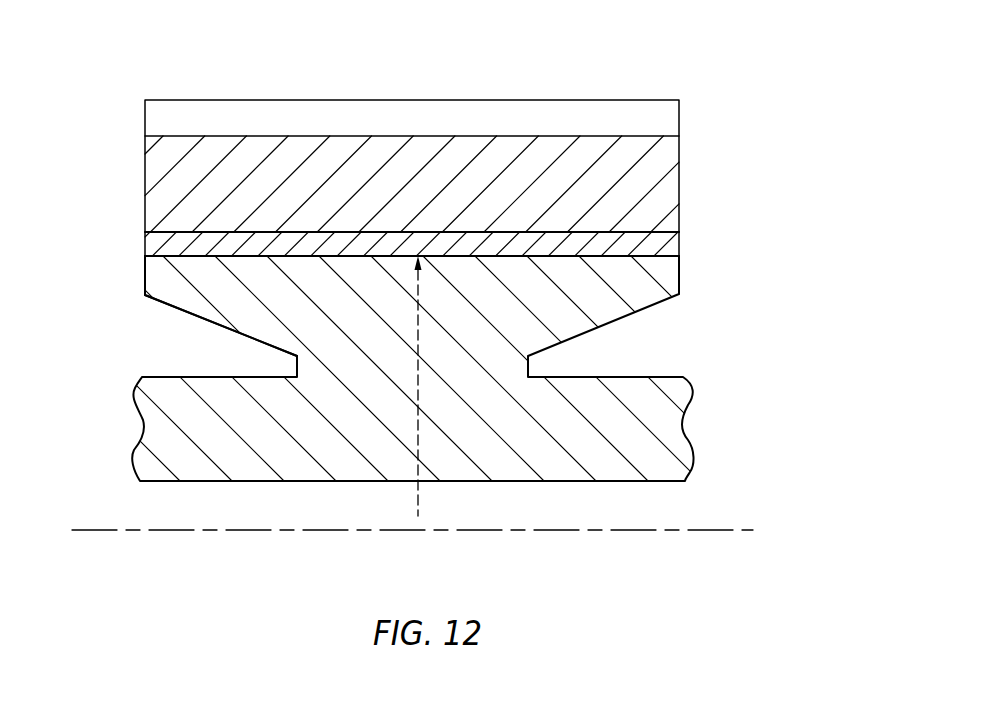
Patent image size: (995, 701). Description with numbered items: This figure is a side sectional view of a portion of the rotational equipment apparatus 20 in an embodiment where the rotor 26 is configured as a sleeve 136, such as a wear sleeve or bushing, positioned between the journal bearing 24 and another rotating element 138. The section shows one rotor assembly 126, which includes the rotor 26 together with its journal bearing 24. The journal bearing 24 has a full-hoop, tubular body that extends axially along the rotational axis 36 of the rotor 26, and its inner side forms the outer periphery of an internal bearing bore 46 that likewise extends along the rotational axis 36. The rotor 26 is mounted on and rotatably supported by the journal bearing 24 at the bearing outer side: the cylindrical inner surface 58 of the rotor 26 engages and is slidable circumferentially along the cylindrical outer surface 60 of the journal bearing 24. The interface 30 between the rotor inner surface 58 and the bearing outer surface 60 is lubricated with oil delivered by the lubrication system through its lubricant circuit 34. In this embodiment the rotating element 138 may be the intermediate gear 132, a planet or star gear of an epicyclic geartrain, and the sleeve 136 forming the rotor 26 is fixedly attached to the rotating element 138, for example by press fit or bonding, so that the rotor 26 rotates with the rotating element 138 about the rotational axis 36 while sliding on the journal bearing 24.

The rotational equipment apparatus 20 is at (454, 311).
The rotor assembly 126 is at (454, 311).
The journal bearing 24 is at (728, 402).
The interface 30 is at (451, 197).
The intermediate gear 132 is at (503, 184).
The rotating element 138 is at (692, 176).
The rotor 26 is at (492, 214).
The sleeve 136 is at (492, 214).
The cylindrical inner surface 58 is at (182, 258).
The cylindrical outer surface 60 is at (208, 257).
The lubricant circuit 34 is at (418, 418).
The bearing bore 46 is at (422, 557).
The rotational axis 36 is at (412, 576).